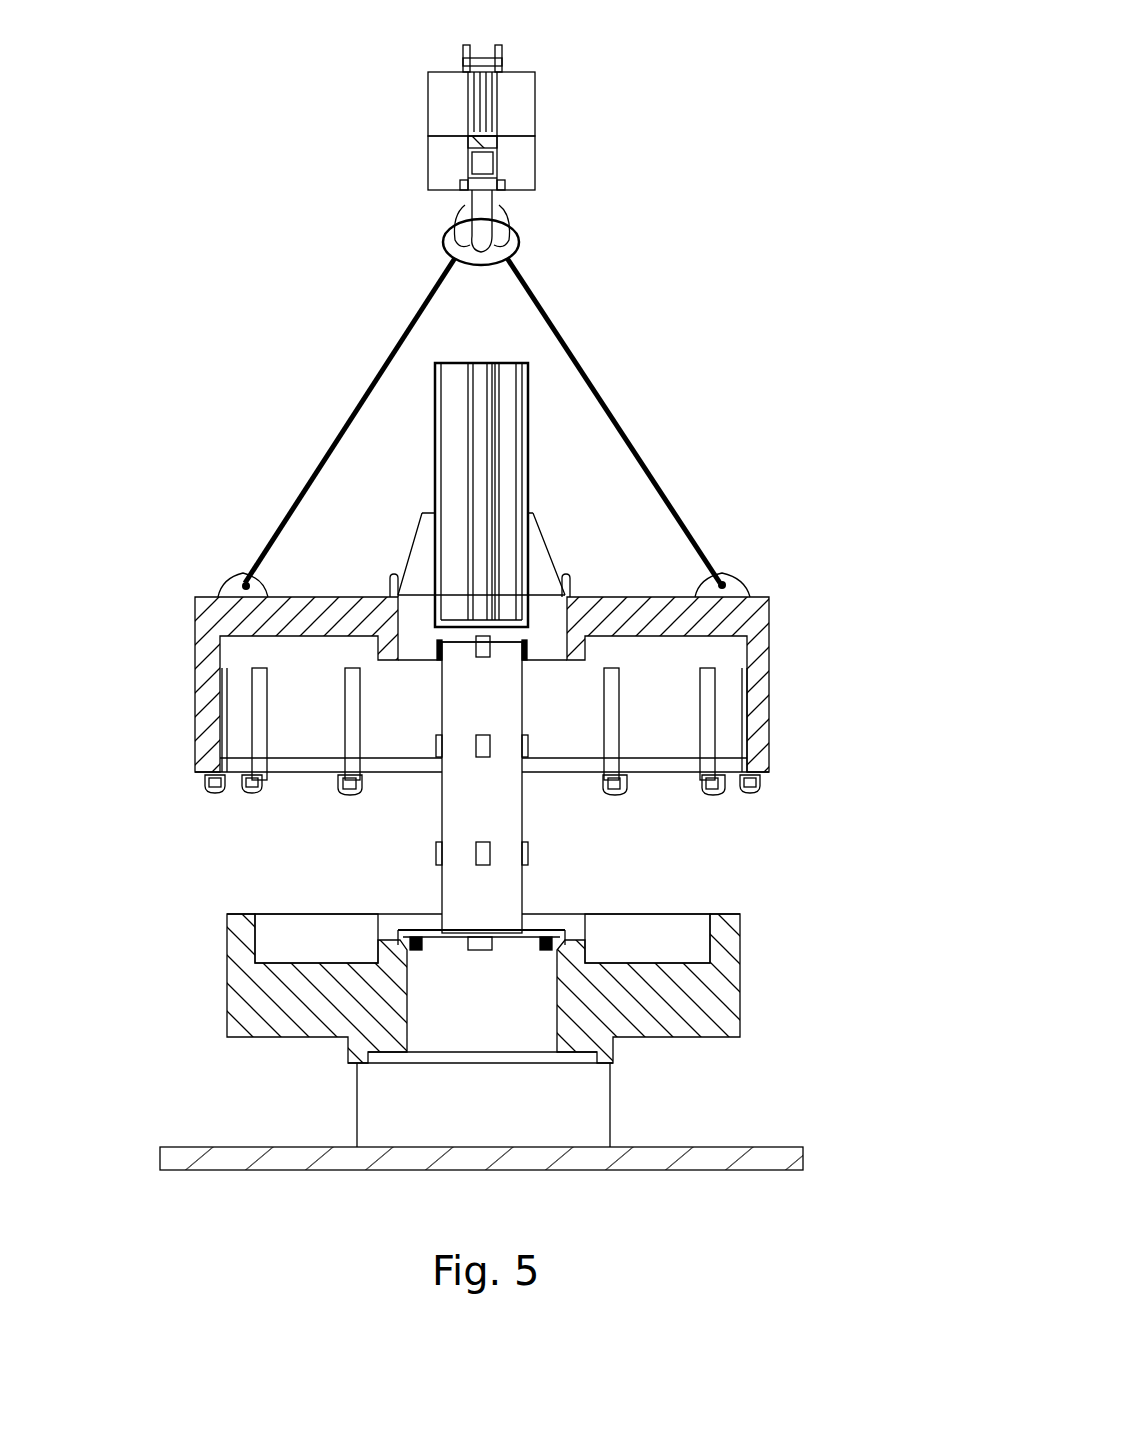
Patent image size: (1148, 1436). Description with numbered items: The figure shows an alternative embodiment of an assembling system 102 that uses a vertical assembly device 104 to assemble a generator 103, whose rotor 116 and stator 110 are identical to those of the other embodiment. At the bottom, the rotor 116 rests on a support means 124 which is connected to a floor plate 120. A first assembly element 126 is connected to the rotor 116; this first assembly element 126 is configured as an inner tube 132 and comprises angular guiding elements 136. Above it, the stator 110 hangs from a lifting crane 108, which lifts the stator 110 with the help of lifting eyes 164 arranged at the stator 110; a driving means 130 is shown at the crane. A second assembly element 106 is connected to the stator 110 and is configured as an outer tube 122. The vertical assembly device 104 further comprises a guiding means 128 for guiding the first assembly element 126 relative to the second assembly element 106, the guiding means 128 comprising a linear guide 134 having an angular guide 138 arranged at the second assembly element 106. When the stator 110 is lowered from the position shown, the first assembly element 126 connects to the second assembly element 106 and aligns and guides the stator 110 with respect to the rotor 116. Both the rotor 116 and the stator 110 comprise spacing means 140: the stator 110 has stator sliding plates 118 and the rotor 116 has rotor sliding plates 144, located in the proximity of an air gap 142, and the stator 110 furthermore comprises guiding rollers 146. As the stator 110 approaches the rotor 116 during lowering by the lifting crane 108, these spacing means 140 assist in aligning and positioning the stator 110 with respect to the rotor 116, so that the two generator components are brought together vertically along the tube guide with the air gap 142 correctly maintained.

The assembling system 102 is at (176, 100).
The generator 103 is at (190, 560).
The vertical assembly device 104 is at (513, 322).
The second assembly element 106 is at (513, 420).
The lifting crane 108 is at (512, 108).
The stator 110 is at (756, 659).
The rotor 116 is at (710, 992).
The stator sliding plate 118 is at (707, 725).
The floor plate 120 is at (708, 1158).
The outer tube 122 is at (509, 487).
The support means 124 is at (587, 1112).
The first assembly element 126 is at (486, 884).
The guiding means 128 is at (481, 380).
The driving means 130 is at (513, 166).
The inner tube 132 is at (472, 794).
The linear guide 134 is at (481, 586).
The angular guiding elements 136 is at (478, 848).
The angular guide 138 is at (683, 491).
The spacing means 140 is at (708, 758).
The air gap 142 is at (229, 786).
The rotor sliding plate 144 is at (742, 923).
The guiding rollers 146 is at (354, 797).
The lifting eye 164 is at (733, 586).